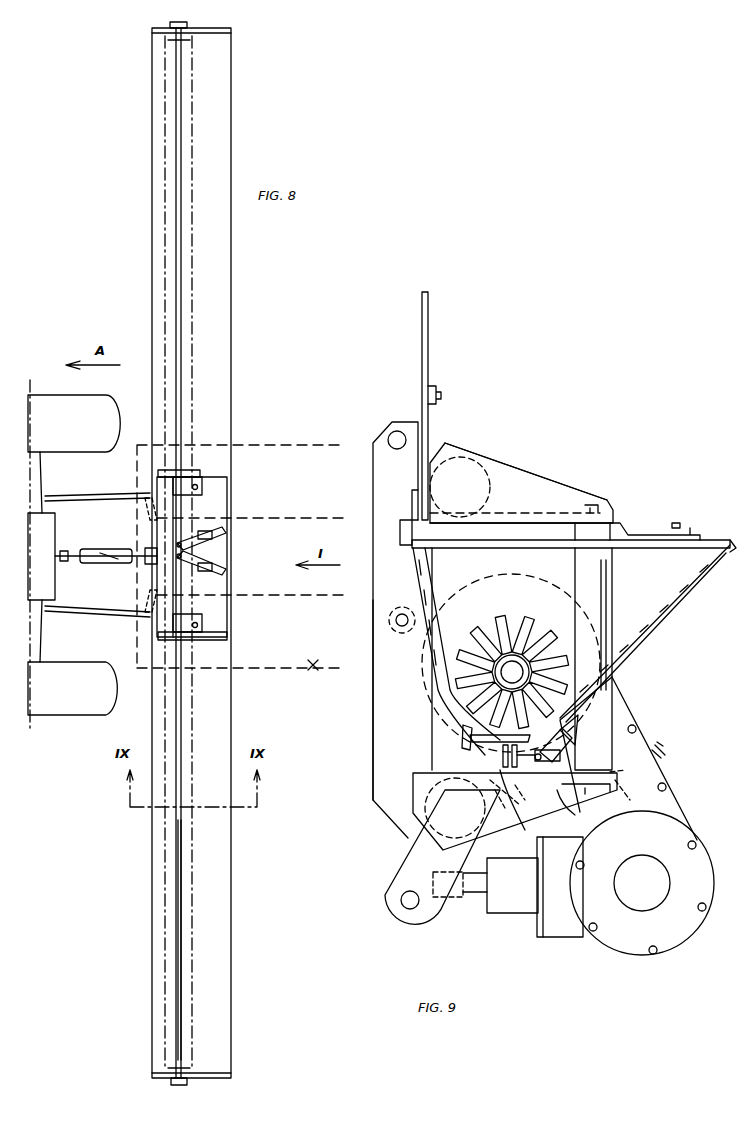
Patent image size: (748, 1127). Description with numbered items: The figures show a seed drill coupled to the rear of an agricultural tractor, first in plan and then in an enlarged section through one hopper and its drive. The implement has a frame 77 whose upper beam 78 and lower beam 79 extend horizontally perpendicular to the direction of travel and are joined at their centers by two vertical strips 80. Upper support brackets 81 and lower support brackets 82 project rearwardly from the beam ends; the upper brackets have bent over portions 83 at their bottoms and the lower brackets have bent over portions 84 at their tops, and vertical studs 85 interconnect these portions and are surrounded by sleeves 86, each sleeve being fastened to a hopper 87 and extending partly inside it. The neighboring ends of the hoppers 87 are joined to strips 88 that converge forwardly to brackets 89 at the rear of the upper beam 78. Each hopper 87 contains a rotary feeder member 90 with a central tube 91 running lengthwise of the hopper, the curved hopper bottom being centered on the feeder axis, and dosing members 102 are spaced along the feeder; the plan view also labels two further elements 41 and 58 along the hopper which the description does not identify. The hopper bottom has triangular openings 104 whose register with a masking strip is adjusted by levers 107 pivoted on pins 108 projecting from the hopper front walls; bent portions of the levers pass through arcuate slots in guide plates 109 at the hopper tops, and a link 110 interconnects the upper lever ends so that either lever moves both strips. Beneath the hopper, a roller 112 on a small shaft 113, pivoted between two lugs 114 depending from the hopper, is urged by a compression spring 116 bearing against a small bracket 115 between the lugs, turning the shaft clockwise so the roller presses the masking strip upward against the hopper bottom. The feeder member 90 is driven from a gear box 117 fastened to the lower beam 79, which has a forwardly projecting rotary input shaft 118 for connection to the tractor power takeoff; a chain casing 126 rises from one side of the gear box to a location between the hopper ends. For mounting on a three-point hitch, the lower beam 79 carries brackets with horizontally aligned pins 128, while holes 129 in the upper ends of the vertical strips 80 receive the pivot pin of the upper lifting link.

In FIG. 8, the inner rod 41 is at (180, 912).
In FIG. 8, the rod 58 is at (187, 980).
In FIG. 9, the frame 77 is at (367, 767).
In FIG. 8, the upper beam 78 is at (170, 511).
In FIG. 9, the upper beam 78 is at (478, 470).
In FIG. 9, the lower beam 79 is at (501, 848).
In FIG. 9, the vertical strips 80 is at (373, 722).
In FIG. 8, the upper support brackets 81 is at (200, 476).
In FIG. 9, the upper support brackets 81 is at (530, 483).
In FIG. 9, the lower support brackets 82 is at (582, 815).
In FIG. 8, the bent over portions 83 is at (190, 622).
In FIG. 9, the bent over portions 83 is at (546, 502).
In FIG. 9, the bent over portions 84 is at (610, 805).
In FIG. 9, the vertical studs 85 is at (598, 500).
In FIG. 9, the sleeves 86 is at (606, 577).
In FIG. 8, the hopper 87 is at (225, 104).
In FIG. 9, the hopper 87 is at (574, 631).
In FIG. 8, the strips 88 is at (140, 525).
In FIG. 9, the strips 88 is at (640, 528).
In FIG. 8, the brackets 89 is at (222, 520).
In FIG. 8, the rotary feeder member 90 is at (188, 166).
In FIG. 9, the rotary feeder member 90 is at (482, 640).
In FIG. 8, the central tube 91 is at (178, 238).
In FIG. 9, the central tube 91 is at (478, 646).
In FIG. 9, the dosing members 102 is at (523, 603).
In FIG. 9, the triangular openings 104 is at (455, 808).
In FIG. 9, the levers 107 is at (421, 322).
In FIG. 9, the pivot pins 108 is at (437, 693).
In FIG. 9, the guide plates 109 is at (412, 500).
In FIG. 9, the link 110 is at (438, 384).
In FIG. 9, the roller 112 is at (515, 760).
In FIG. 9, the small shaft 113 is at (540, 803).
In FIG. 9, the lugs 114 is at (580, 740).
In FIG. 9, the small bracket 115 is at (622, 693).
In FIG. 9, the compression spring 116 is at (565, 758).
In FIG. 9, the gear box 117 is at (568, 930).
In FIG. 9, the rotary input shaft 118 is at (465, 895).
In FIG. 8, the chain casing 126 is at (222, 556).
In FIG. 9, the chain casing 126 is at (676, 807).
In FIG. 9, the pins 128 is at (402, 900).
In FIG. 9, the holes 129 is at (397, 430).